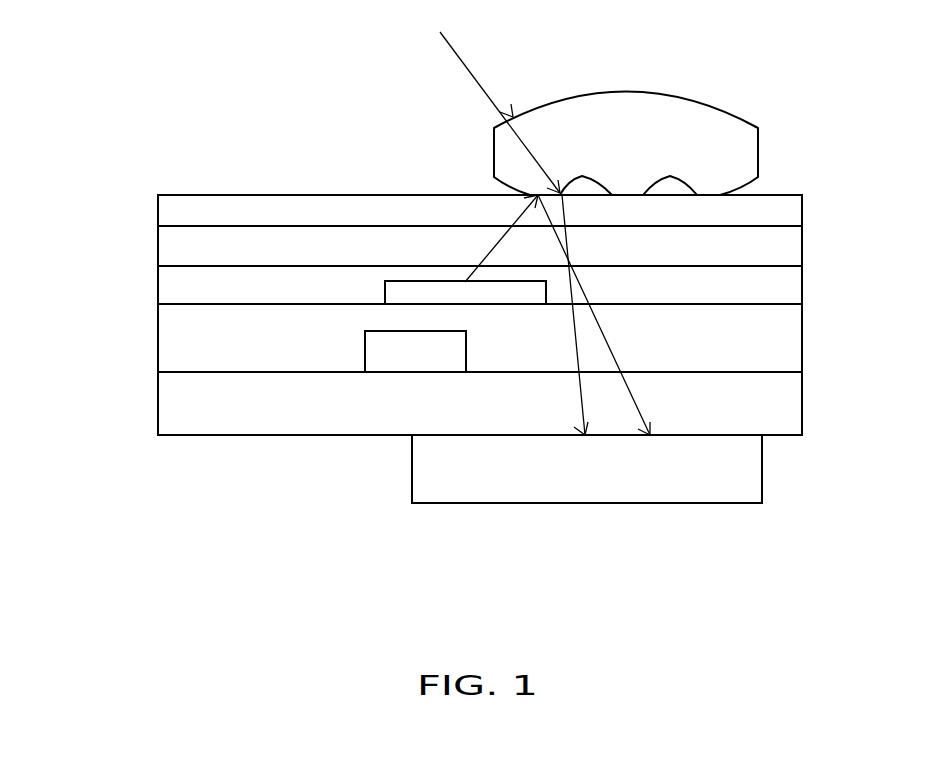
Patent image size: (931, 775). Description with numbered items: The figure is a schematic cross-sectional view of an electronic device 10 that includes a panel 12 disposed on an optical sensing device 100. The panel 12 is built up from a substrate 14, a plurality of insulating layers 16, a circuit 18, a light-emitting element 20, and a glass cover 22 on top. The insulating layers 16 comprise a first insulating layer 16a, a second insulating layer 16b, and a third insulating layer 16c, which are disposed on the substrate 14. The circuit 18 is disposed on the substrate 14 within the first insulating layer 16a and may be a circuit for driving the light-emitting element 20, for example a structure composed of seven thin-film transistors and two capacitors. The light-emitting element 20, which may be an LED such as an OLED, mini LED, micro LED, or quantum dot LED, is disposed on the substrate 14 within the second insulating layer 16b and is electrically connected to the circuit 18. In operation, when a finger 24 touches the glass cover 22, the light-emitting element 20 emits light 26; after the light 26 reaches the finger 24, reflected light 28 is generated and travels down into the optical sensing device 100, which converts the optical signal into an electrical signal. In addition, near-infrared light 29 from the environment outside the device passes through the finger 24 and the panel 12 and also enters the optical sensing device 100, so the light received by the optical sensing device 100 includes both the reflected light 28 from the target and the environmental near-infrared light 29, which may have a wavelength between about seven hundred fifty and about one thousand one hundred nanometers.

The electronic device 10 is at (166, 101).
The panel 12 is at (802, 195).
The substrate 14 is at (158, 404).
The insulating layers 16 is at (92, 230).
The first insulating layer 16a is at (158, 338).
The second insulating layer 16b is at (158, 286).
The third insulating layer 16c is at (158, 248).
The circuit 18 is at (378, 352).
The light-emitting element 20 is at (388, 292).
The glass cover 22 is at (158, 212).
The finger 24 is at (758, 150).
The light 26 is at (492, 248).
The reflected light 28 is at (607, 342).
The near-infrared light 29 is at (477, 73).
The optical sensing device 100 is at (762, 470).